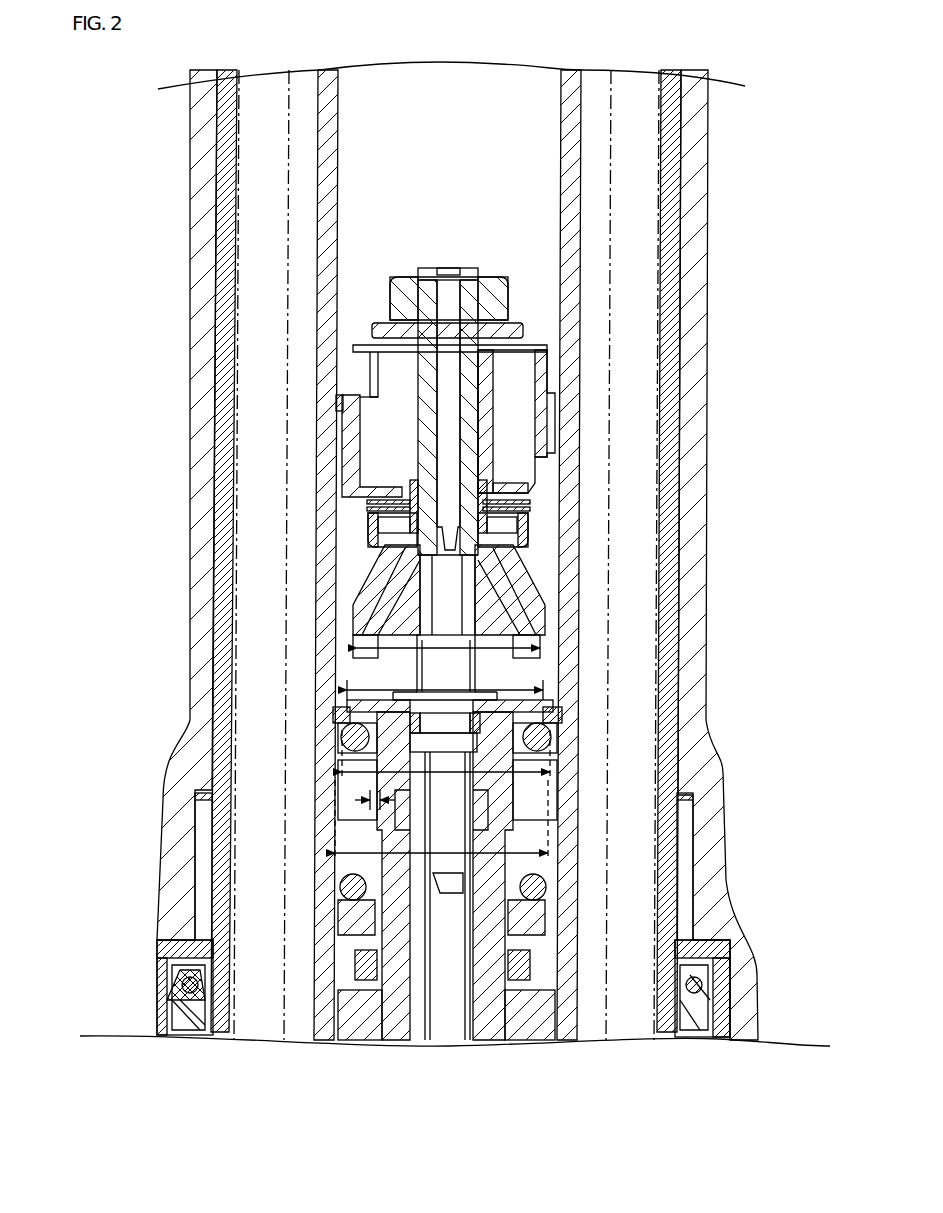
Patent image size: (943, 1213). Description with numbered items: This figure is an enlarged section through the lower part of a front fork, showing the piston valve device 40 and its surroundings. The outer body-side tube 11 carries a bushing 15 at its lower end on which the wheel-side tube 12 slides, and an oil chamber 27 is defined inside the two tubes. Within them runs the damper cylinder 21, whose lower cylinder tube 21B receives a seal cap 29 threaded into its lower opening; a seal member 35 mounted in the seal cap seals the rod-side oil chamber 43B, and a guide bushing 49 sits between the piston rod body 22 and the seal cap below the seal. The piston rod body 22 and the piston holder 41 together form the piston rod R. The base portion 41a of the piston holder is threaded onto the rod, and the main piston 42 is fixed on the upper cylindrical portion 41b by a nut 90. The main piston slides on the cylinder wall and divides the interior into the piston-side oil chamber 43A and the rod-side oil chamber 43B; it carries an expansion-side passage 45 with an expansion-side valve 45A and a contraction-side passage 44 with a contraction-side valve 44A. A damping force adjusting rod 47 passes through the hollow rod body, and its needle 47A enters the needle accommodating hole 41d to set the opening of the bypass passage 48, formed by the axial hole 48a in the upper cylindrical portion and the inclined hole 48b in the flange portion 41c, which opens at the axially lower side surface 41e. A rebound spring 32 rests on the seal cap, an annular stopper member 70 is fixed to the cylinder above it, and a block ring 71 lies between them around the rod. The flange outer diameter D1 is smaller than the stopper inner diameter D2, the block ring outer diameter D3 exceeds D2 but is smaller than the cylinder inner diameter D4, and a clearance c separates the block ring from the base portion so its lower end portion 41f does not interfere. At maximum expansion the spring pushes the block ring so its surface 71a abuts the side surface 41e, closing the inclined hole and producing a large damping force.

The body-side tube 11 is at (212, 121).
The wheel-side tube 12 is at (228, 183).
The bushing 15 is at (205, 905).
The damper cylinder 21 is at (335, 229).
The lower cylinder tube 21B is at (340, 382).
The piston rod body 22 is at (393, 873).
The oil chamber 27 is at (257, 977).
The seal cap 29 is at (665, 1012).
The rebound spring 32 is at (300, 795).
The seal member 35 is at (603, 963).
The piston valve device 40 is at (495, 238).
The piston holder 41 is at (385, 830).
The base portion 41a is at (457, 776).
The upper cylindrical portion 41b is at (467, 412).
The flange portion 41c is at (527, 605).
The needle accommodating hole 41d is at (465, 674).
The axially lower side surface 41e is at (355, 660).
The lower end portion 41f is at (507, 810).
The main piston 42 is at (563, 432).
The piston-side oil chamber 43A is at (462, 148).
The rod-side oil chamber 43B is at (440, 672).
The contraction-side passage 44 is at (405, 432).
The contraction-side valve 44A is at (358, 345).
The expansion-side passage 45 is at (517, 378).
The expansion-side valve 45A is at (498, 518).
The damping force adjusting rod 47 is at (443, 943).
The needle 47A is at (447, 577).
The bypass passage 48 is at (306, 518).
The axial hole 48a is at (445, 471).
The inclined hole 48b is at (523, 535).
The guide bushing 49 is at (215, 1013).
The stopper member 70 is at (332, 715).
The block ring 71 is at (545, 738).
The surface 71a is at (548, 708).
The nut 90 is at (497, 298).
The outer diameter of the flange portion D1 is at (545, 648).
The inner diameter of the stopper member D2 is at (345, 690).
The outer diameter of the block ring D3 is at (560, 772).
The inner diameter of the damper cylinder D4 is at (552, 858).
The clearance c is at (370, 800).
The piston rod R is at (104, 890).